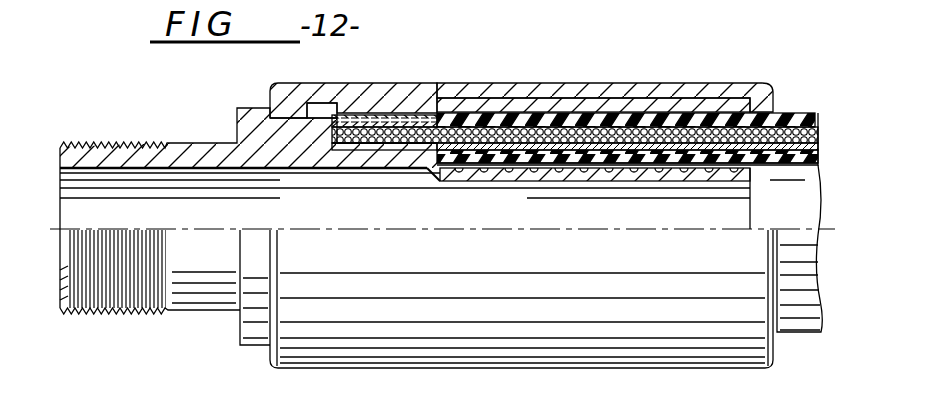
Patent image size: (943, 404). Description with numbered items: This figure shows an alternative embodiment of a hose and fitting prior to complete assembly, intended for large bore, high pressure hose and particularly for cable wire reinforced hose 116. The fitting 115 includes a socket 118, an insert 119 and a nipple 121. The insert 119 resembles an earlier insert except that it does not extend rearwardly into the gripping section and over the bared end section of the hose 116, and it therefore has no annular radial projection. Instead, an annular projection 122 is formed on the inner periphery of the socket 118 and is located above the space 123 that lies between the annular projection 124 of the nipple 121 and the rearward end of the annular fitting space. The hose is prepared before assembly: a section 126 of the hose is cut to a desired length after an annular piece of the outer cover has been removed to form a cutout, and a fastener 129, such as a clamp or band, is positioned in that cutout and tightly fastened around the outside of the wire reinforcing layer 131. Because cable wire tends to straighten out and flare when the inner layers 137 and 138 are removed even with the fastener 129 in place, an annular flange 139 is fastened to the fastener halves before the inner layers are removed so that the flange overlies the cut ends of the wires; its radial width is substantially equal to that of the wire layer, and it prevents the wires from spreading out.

The fitting 115 is at (228, 341).
The hose 116 is at (799, 92).
The socket 118 is at (558, 90).
The insert 119 is at (525, 107).
The nipple 121 is at (187, 150).
The annular projection 122 is at (362, 108).
The space 123 is at (363, 146).
The annular projection 124 is at (417, 148).
The section of the hose 126 is at (785, 118).
The fastener 129 is at (408, 115).
The wire reinforcing layer 131 is at (490, 130).
The inner layer 137 is at (810, 145).
The inner layer 138 is at (777, 152).
The annular flange 139 is at (317, 98).